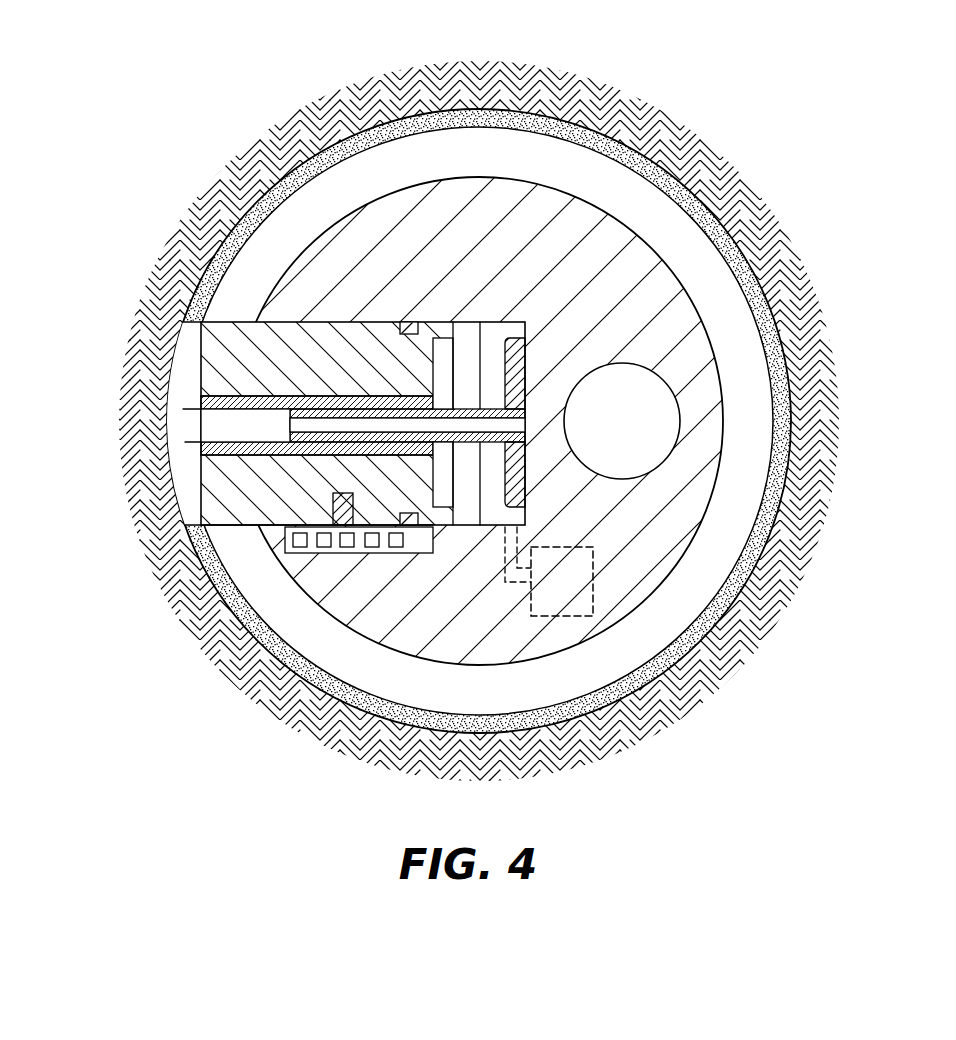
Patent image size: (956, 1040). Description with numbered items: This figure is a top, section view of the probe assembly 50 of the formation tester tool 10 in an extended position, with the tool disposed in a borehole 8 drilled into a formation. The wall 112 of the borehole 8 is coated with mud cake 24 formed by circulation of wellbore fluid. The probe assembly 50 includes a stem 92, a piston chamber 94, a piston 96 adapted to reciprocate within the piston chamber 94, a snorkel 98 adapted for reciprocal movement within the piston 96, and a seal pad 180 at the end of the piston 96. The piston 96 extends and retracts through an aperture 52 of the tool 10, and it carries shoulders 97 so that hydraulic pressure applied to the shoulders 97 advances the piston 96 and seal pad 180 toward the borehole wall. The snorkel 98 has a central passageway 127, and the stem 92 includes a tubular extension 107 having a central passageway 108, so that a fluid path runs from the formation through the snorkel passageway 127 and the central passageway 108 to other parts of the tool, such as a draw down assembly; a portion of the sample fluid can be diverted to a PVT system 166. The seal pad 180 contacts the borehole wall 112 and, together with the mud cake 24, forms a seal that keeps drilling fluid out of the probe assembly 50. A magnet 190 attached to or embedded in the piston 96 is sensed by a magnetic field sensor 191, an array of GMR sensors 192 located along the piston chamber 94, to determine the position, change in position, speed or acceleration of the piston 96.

The formation tester tool 10 is at (459, 170).
The wall of borehole 112 is at (243, 228).
The mud cake 24 is at (415, 737).
The borehole 8 is at (478, 706).
The probe assembly 50 is at (331, 391).
The seal pad 180 is at (185, 366).
The central passageway 127 is at (215, 427).
The snorkel 98 is at (234, 398).
The piston 96 is at (360, 357).
The shoulders 97 is at (422, 328).
The tubular extension 107 is at (483, 407).
The central passageway 108 is at (520, 422).
The stem 92 is at (480, 443).
The magnet 190 is at (347, 492).
The aperture 52 is at (277, 526).
The magnetic field sensor 191 is at (359, 608).
The GMR sensors 192 is at (348, 565).
The piston chamber 94 is at (498, 513).
The PVT system 166 is at (562, 545).